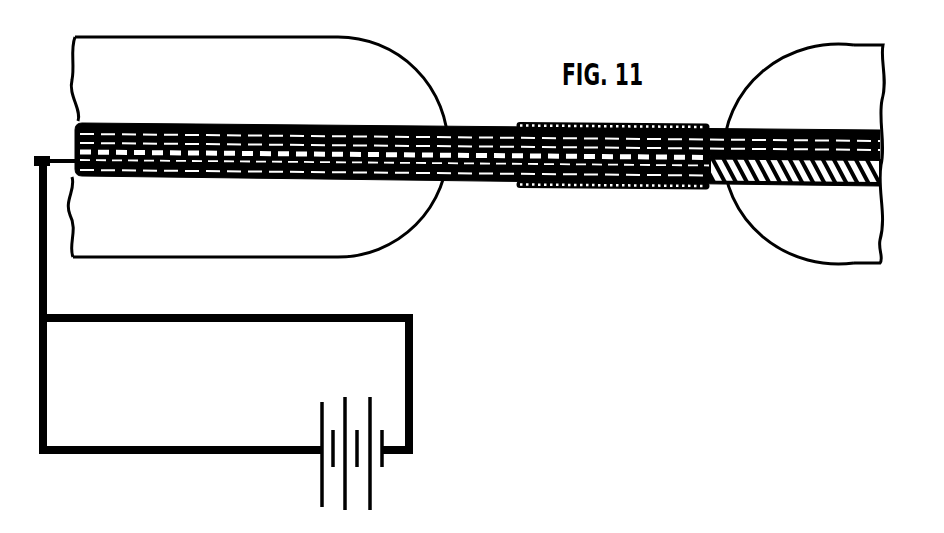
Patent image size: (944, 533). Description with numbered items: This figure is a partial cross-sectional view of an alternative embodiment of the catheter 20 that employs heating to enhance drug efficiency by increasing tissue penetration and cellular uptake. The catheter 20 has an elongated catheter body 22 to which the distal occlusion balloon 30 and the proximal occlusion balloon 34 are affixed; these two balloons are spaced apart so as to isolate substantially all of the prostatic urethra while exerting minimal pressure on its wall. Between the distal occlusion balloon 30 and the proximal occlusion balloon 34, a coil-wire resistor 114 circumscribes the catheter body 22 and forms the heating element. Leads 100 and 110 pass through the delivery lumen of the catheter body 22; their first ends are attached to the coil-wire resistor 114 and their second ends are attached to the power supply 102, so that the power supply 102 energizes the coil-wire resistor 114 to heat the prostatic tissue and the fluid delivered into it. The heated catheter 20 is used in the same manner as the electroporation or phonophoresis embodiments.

The catheter 20 is at (60, 106).
The catheter body 22 is at (741, 185).
The distal occlusion balloon 30 is at (788, 78).
The proximal occlusion balloon 34 is at (366, 42).
The lead 100 is at (48, 406).
The power supply 102 is at (320, 490).
The lead 110 is at (218, 314).
The coil-wire resistor 114 is at (522, 122).